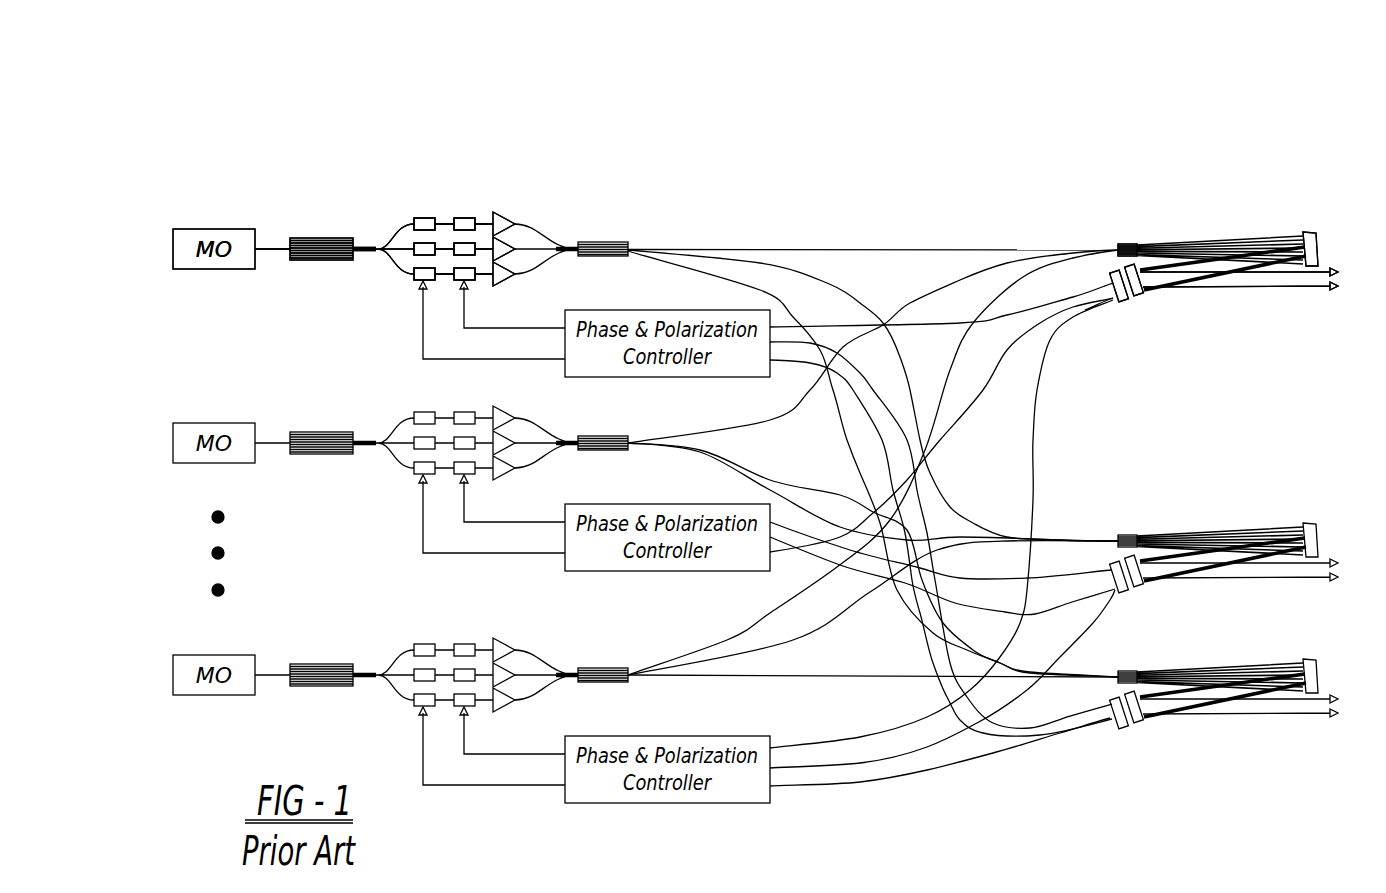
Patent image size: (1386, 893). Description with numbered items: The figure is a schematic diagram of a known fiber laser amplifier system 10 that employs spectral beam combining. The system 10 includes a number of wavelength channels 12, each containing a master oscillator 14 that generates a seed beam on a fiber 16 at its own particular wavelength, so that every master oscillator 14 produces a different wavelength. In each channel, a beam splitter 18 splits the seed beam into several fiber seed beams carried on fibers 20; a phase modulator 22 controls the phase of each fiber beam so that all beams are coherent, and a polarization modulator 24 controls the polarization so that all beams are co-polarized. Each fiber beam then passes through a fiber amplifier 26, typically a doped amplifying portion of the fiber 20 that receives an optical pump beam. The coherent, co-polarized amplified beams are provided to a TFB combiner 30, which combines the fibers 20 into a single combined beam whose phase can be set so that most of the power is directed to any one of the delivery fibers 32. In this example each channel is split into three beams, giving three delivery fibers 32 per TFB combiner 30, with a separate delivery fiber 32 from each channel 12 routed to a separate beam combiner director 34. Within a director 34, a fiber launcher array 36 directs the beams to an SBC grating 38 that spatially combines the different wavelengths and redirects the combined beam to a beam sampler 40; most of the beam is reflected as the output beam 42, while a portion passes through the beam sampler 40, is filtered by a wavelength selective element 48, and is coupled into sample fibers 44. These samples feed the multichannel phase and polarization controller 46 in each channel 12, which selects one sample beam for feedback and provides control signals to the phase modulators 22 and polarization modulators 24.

The fiber laser amplifier system 10 is at (968, 131).
The wavelength channel 12 is at (183, 205).
The master oscillator 14 is at (230, 228).
The fiber 16 is at (275, 251).
The beam splitter 18 is at (323, 238).
The fibers 20 is at (388, 239).
The phase modulator 22 is at (423, 218).
The polarization modulator 24 is at (464, 218).
The fiber amplifier 26 is at (505, 214).
The TFB combiner 30 is at (600, 243).
The delivery fiber 32 is at (927, 249).
The beam combiner director 34 is at (1227, 220).
The fiber launcher array 36 is at (1128, 244).
The spectral beam combining (SBC) grating 38 is at (1310, 232).
The beam sampler 40 is at (1141, 297).
The output beam 42 is at (1257, 289).
The sample fibers 44 is at (1103, 307).
The phase and polarization controller 46 is at (640, 377).
The wavelength selective element 48 is at (1129, 299).